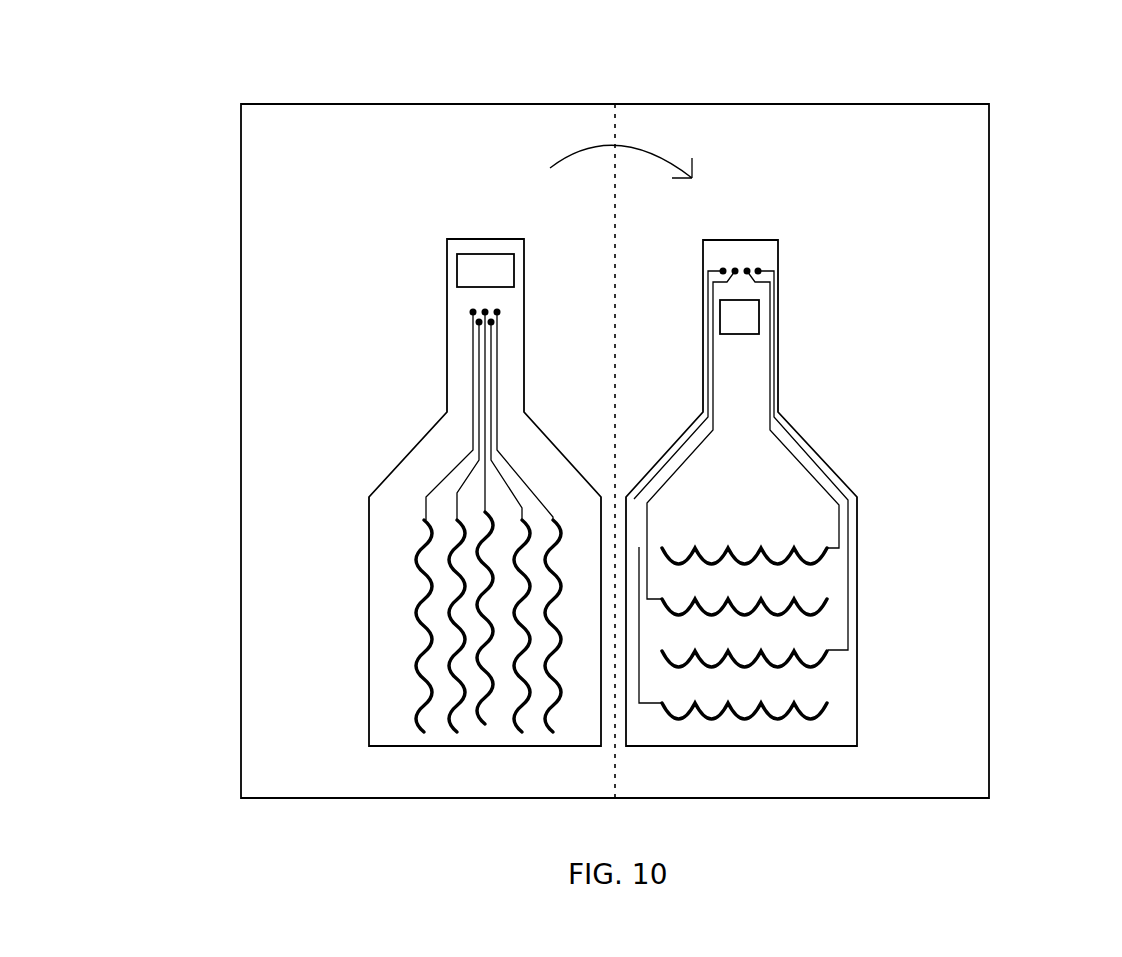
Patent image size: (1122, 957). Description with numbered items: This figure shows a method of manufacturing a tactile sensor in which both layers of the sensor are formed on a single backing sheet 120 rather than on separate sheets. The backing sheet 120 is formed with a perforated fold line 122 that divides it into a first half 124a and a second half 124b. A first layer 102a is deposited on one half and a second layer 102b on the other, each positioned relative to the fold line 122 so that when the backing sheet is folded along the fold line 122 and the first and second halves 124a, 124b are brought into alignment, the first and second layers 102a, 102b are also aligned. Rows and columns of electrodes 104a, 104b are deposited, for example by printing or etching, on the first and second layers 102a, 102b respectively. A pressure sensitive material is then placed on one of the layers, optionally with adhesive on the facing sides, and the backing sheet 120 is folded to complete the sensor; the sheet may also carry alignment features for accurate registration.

The backing sheet 120 is at (1009, 99).
The perforated fold line 122 is at (612, 137).
The first half of the backing sheet 124a is at (962, 137).
The second half of the backing sheet 124b is at (263, 132).
The first layer 102a is at (842, 748).
The second layer 102b is at (372, 748).
The rows of electrodes 104a is at (832, 622).
The columns of electrodes 104b is at (423, 607).